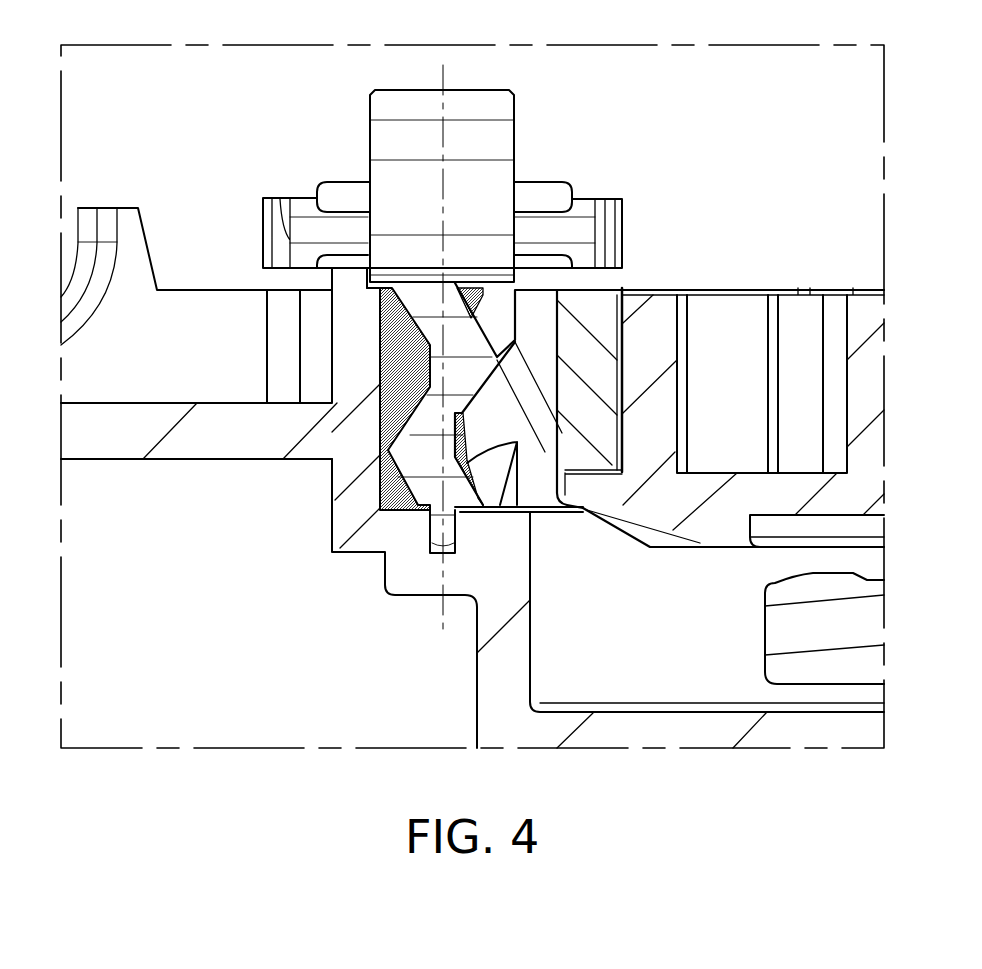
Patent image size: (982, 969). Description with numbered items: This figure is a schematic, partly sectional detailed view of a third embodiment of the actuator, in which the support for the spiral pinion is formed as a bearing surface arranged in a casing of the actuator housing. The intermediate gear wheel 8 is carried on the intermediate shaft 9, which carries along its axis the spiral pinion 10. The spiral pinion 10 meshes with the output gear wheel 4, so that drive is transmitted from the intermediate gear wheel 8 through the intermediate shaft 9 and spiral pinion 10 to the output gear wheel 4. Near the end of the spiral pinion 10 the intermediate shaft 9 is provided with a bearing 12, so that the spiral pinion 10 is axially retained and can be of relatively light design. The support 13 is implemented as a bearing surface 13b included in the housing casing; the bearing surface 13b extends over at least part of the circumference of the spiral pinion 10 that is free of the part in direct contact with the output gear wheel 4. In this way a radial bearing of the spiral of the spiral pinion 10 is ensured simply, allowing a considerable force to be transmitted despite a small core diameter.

The output gear wheel 4 is at (864, 497).
The intermediate gear wheel 8 is at (612, 215).
The intermediate shaft 9 is at (500, 143).
The spiral pinion 10 is at (405, 460).
The bearing 12 is at (428, 530).
The support 13 is at (250, 409).
The bearing surface 13b is at (403, 383).